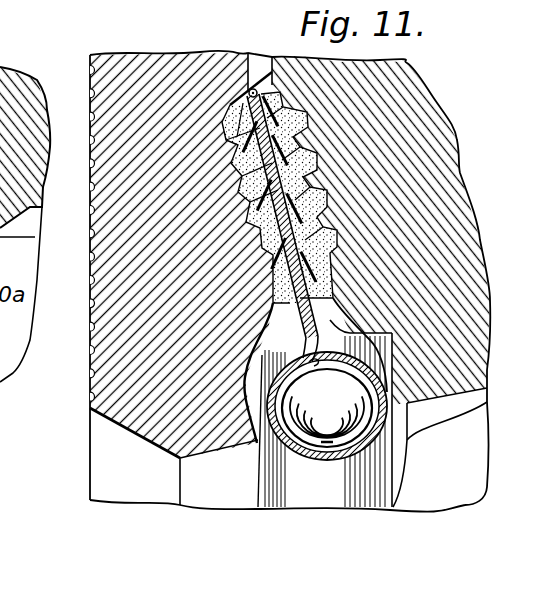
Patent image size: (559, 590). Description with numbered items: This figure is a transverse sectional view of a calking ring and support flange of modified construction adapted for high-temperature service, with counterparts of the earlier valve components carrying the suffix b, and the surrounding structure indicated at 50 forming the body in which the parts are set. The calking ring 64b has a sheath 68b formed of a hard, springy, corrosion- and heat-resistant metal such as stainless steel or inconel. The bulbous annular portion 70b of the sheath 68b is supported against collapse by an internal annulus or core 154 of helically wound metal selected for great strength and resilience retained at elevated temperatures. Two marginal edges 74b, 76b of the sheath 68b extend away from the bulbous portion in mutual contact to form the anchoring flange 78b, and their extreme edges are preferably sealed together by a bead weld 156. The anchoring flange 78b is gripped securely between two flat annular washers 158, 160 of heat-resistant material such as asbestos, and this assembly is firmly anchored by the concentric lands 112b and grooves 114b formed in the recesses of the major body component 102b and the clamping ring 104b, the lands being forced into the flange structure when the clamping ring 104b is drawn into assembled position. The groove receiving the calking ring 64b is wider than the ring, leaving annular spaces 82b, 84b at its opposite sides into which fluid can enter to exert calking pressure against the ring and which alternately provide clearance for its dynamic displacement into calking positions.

The body 50 is at (458, 483).
The calking ring 64b is at (293, 450).
The sheath 68b is at (361, 502).
The bulbous annular portion 70b is at (318, 463).
The marginal edge 74b is at (228, 196).
The marginal edge 76b is at (300, 151).
The anchoring flange 78b is at (323, 200).
The annular space 82b is at (257, 387).
The annular space 84b is at (380, 350).
The major body component 102b is at (413, 100).
The clamping ring 104b is at (100, 400).
The lands 112b is at (227, 187).
The grooves 114b is at (230, 140).
The internal annulus or core 154 is at (262, 372).
The bead weld 156 is at (253, 89).
The flat annular washer 158 is at (262, 253).
The flat annular washer 160 is at (333, 253).